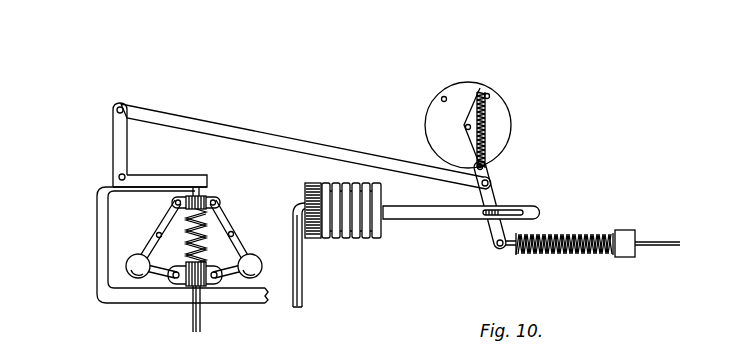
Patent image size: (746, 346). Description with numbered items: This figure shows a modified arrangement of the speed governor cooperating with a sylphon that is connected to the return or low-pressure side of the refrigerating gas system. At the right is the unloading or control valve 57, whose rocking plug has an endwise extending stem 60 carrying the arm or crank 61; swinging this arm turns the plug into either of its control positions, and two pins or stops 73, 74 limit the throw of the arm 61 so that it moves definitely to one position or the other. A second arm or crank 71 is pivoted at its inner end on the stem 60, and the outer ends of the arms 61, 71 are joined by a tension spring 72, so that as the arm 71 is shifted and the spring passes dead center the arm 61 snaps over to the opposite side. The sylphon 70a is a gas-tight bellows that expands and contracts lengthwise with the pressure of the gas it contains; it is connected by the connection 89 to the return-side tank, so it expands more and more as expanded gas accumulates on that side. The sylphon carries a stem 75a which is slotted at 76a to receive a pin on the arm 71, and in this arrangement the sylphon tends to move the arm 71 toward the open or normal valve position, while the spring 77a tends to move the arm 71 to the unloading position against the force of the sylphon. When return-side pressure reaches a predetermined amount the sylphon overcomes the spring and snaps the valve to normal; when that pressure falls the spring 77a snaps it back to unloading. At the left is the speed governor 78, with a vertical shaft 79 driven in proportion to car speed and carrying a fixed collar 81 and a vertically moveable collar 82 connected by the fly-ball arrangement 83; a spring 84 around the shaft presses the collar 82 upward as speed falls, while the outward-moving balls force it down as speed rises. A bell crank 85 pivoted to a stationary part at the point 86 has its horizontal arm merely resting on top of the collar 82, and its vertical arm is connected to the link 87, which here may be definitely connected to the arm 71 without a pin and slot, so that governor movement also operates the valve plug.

The unloading or control valve 57 is at (522, 100).
The stem 60 is at (466, 128).
The arm or crank 61 is at (468, 113).
The sylphon 70a is at (355, 239).
The arm or crank 71 is at (492, 200).
The tension spring 72 is at (486, 137).
The pin or stop 73 is at (445, 96).
The pin or stop 74 is at (490, 94).
The stem 75a is at (440, 217).
The slot 76a is at (525, 210).
The spring 77a is at (590, 255).
The speed governor 78 is at (113, 278).
The vertical shaft 79 is at (203, 320).
The fixed collar 81 is at (190, 276).
The vertically moveable collar 82 is at (200, 196).
The fly-ball arrangement 83 is at (127, 267).
The spring 84 is at (183, 232).
The bell crank 85 is at (105, 150).
The pivot point 86 is at (116, 172).
The link 87 is at (263, 137).
The connection 89 is at (300, 297).